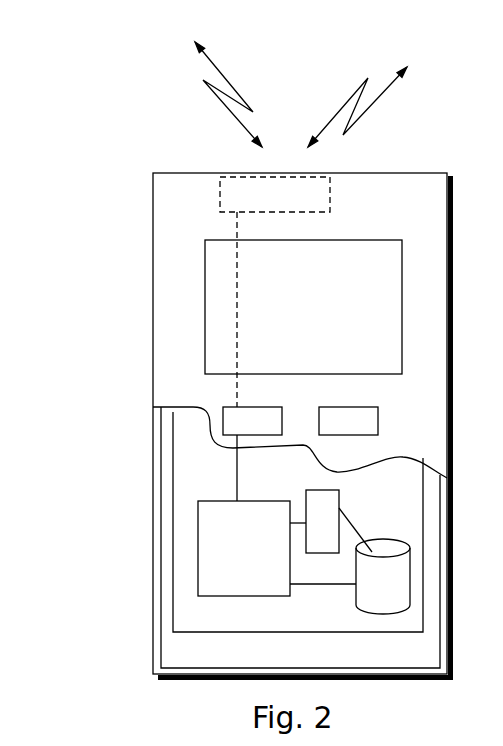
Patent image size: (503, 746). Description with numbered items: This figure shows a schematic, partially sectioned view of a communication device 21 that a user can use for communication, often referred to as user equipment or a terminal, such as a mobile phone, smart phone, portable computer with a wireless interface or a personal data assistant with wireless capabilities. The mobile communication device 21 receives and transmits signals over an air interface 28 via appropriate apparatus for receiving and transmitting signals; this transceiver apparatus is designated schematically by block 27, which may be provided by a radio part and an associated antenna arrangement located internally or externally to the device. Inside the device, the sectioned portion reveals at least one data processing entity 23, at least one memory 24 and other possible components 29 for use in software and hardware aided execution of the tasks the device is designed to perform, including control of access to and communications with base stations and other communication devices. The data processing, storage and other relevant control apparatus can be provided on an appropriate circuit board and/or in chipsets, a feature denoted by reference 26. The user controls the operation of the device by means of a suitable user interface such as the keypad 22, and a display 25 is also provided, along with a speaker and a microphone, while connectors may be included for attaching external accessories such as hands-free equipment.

The communication device 21 is at (155, 215).
The keypad 22 is at (207, 410).
The data processing entity 23 is at (207, 532).
The memory 24 is at (377, 588).
The display 25 is at (222, 295).
The circuit board 26 is at (199, 615).
The transceiver apparatus 27 is at (220, 197).
The air interface 28 is at (301, 94).
The other possible components 29 is at (323, 507).